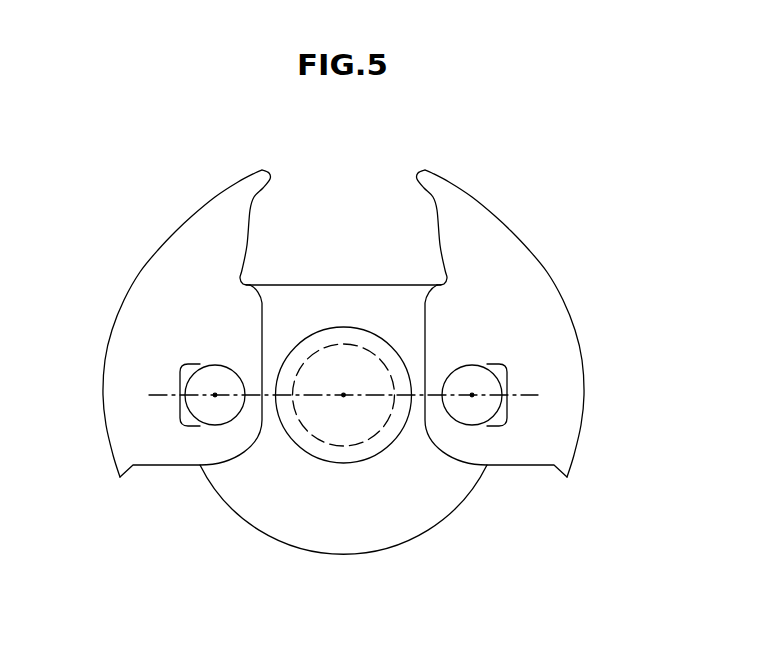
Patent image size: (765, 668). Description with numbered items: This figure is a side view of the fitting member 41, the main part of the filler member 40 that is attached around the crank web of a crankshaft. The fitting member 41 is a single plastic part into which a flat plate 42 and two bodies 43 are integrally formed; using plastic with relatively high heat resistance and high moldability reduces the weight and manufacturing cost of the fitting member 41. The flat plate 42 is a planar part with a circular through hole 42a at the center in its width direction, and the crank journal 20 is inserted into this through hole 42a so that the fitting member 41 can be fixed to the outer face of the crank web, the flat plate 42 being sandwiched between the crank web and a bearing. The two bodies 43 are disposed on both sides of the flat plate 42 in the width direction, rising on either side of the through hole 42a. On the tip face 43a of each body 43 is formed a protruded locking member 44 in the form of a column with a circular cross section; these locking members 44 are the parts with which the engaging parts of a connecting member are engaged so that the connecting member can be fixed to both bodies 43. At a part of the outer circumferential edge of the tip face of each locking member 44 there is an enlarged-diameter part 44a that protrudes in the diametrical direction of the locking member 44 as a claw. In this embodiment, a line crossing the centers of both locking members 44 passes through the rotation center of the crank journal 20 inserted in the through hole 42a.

The filler member 40 is at (122, 164).
The fitting member 41 is at (484, 196).
The flat plate 42 is at (280, 518).
The through hole 42a is at (390, 432).
The body 43 is at (142, 317).
The tip face 43a is at (205, 290).
The locking member 44 is at (193, 380).
The enlarged-diameter part 44a is at (180, 418).
The crank journal 20 is at (353, 433).